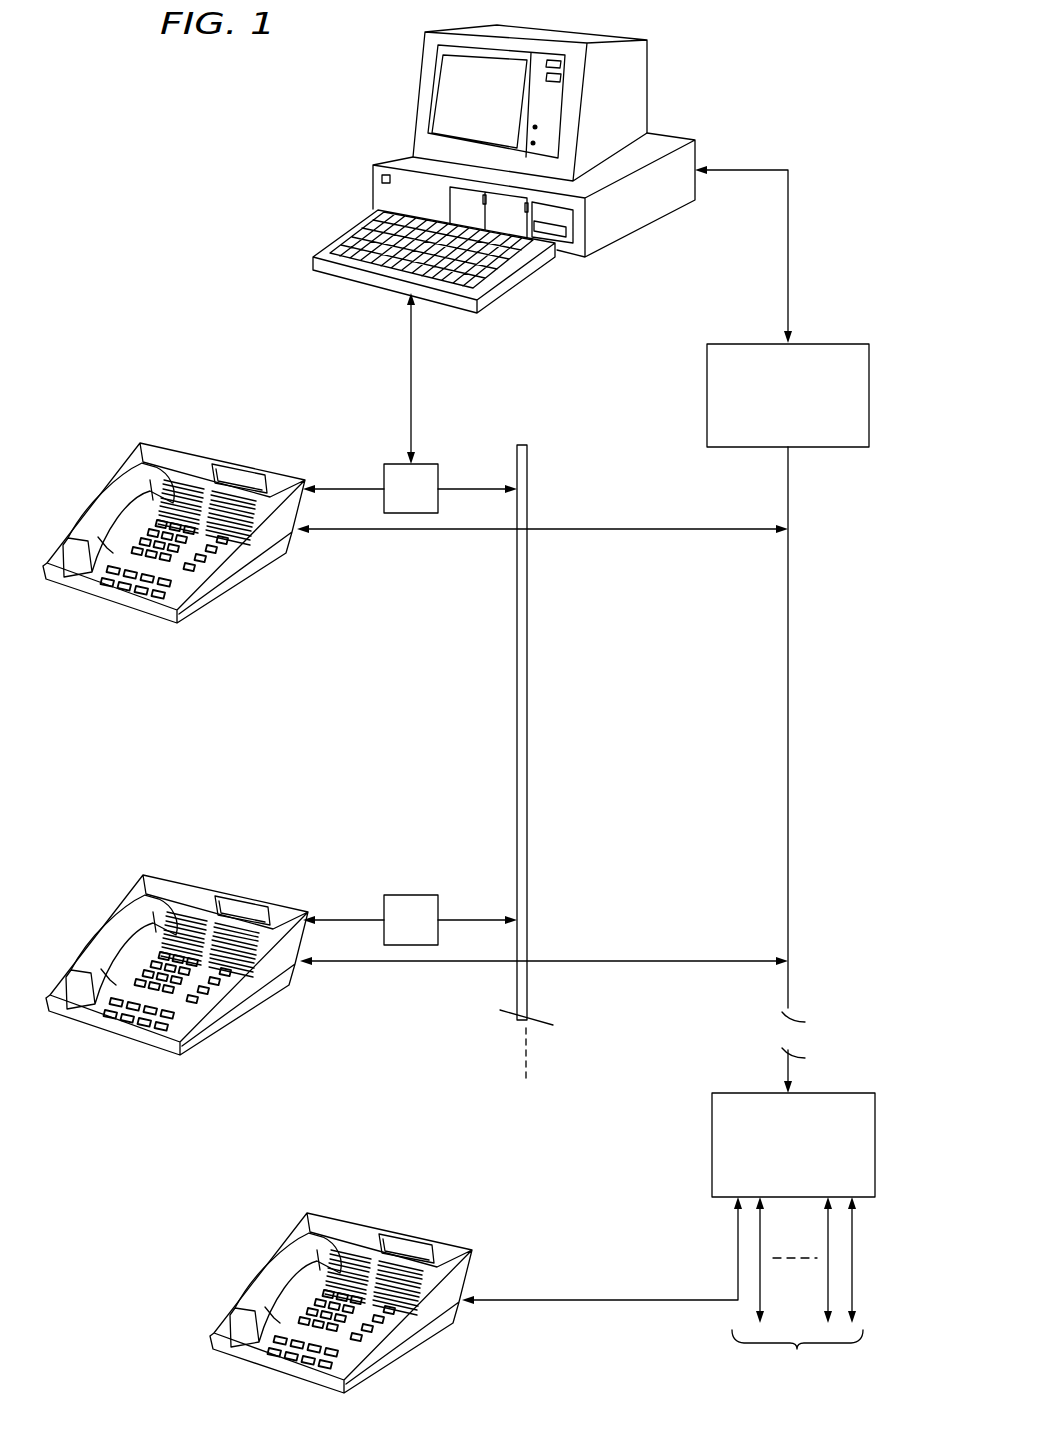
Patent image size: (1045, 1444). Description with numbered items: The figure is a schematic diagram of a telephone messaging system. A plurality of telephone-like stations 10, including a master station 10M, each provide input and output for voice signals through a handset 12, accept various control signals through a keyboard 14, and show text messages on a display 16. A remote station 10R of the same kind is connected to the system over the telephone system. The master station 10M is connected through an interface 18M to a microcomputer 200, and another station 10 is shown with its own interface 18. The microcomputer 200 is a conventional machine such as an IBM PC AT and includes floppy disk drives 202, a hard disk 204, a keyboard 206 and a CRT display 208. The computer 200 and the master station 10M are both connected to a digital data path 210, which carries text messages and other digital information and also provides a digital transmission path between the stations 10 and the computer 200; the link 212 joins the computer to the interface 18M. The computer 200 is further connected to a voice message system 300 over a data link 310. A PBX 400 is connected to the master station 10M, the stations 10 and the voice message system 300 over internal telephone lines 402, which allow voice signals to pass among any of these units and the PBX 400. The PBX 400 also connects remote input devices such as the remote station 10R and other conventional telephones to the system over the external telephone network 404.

The master station 10M is at (230, 607).
The telephone-like station 10 is at (237, 1039).
The remote station 10R is at (401, 1377).
The handset 12 is at (95, 503).
The keyboard 14 is at (174, 536).
The display 16 is at (226, 467).
The interface 18M is at (438, 472).
The interface 18 is at (440, 900).
The microcomputer 200 is at (511, 176).
The floppy disk drives 202 is at (463, 205).
The hard disk 204 is at (643, 223).
The keyboard 206 is at (493, 265).
The CRT display 208 is at (463, 87).
The digital data path 210 is at (528, 476).
The computer link 212 is at (411, 377).
The voice message system (VMS) 300 is at (850, 343).
The data link 310 is at (789, 234).
The PBX 400 is at (853, 1092).
The internal telephone lines 402 is at (647, 532).
The external telephone network 404 is at (662, 1291).